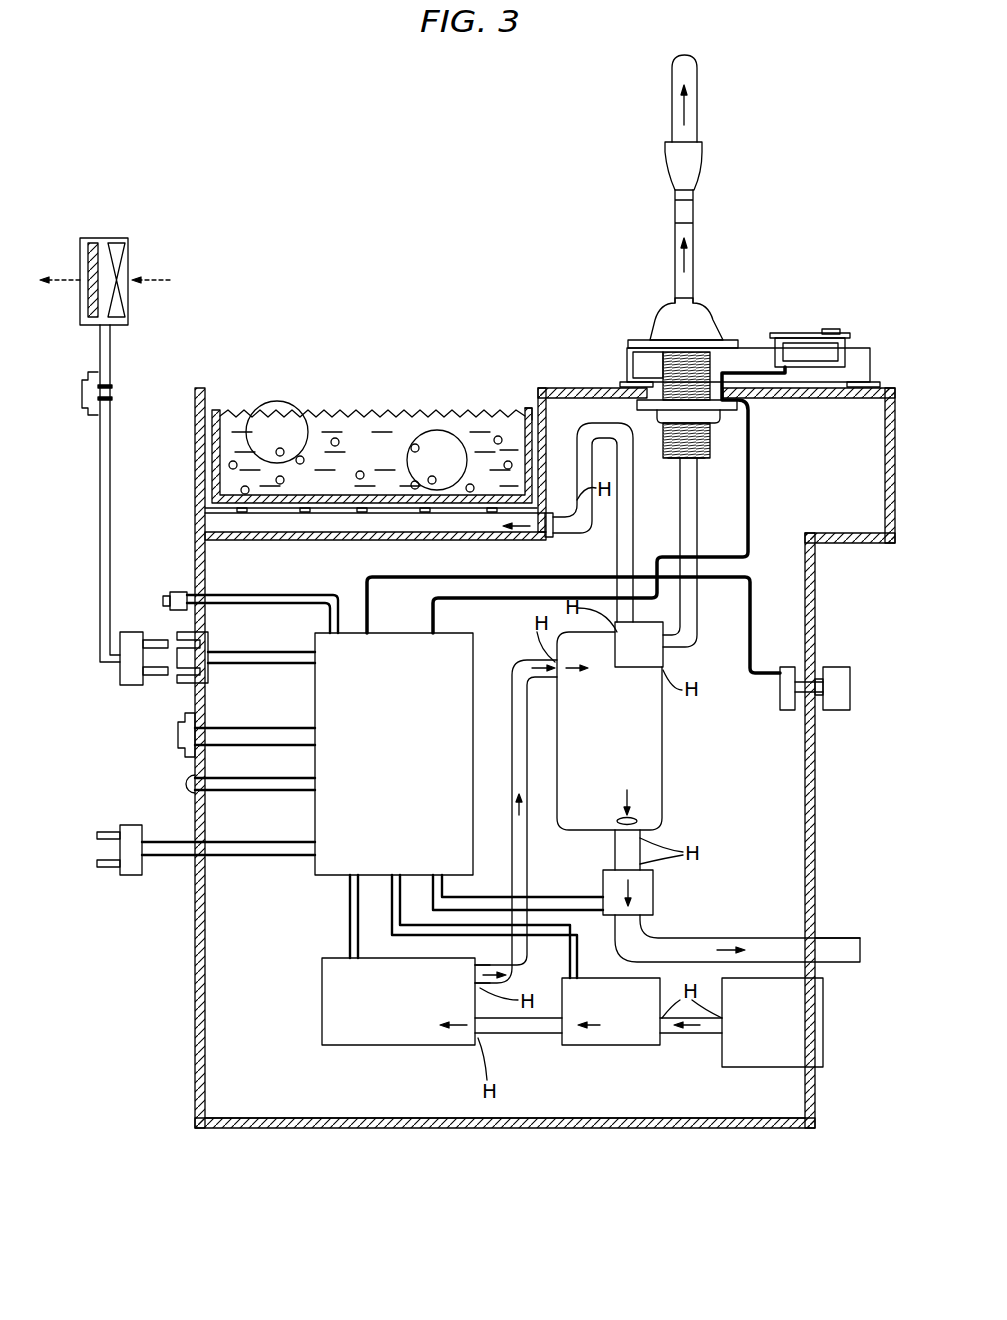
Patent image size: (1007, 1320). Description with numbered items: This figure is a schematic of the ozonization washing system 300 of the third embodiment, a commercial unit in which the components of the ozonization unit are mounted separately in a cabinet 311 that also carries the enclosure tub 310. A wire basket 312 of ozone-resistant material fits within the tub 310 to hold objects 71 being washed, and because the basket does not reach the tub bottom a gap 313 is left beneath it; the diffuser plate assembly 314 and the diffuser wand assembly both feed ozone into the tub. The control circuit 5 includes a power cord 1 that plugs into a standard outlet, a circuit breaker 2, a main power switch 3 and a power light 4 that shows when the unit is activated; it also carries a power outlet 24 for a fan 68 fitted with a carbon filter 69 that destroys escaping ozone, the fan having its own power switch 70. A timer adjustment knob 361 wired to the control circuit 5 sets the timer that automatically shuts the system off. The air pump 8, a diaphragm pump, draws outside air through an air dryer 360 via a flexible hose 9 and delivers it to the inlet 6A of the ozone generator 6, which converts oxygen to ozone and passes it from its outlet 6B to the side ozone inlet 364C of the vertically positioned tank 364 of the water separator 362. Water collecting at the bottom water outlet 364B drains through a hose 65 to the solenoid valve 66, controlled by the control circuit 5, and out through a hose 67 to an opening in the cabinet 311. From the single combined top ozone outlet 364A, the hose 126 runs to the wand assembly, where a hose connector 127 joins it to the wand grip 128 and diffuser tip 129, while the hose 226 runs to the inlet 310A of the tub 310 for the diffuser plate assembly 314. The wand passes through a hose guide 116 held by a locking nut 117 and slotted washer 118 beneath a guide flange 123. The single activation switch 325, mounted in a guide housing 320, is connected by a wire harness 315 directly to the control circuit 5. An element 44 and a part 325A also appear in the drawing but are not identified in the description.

The power cord 1 is at (120, 828).
The circuit breaker 2 is at (163, 600).
The main power switch 3 is at (180, 722).
The power light 4 is at (185, 782).
The control circuit 5 is at (315, 875).
The ozone generator 6 is at (322, 978).
The inlet 6A is at (470, 1038).
The outlet 6B is at (490, 968).
The air pump 8 is at (578, 1045).
The flexible hose 9 is at (680, 1030).
The power outlet 24 is at (210, 640).
The drain outlet 44 is at (815, 965).
The hose 65 is at (615, 845).
The solenoid valve 66 is at (653, 895).
The hose 67 is at (835, 938).
The fan 68 is at (115, 243).
The carbon filter 69 is at (92, 243).
The power switch 70 is at (82, 392).
The object 71 is at (278, 402).
The hose guide 116 is at (672, 462).
The locking nut 117 is at (665, 430).
The slotted washer 118 is at (640, 403).
The guide flange 123 is at (670, 303).
The hose 126 is at (696, 268).
The hose connector 127 is at (675, 218).
The wand grip 128 is at (676, 168).
The diffuser tip 129 is at (698, 112).
The hose 226 is at (530, 413).
The ozonization washing system 300 is at (258, 212).
The enclosure tub 310 is at (540, 392).
The inlet 310A is at (553, 530).
The cabinet 311 is at (765, 1128).
The wire basket 312 is at (218, 412).
The gap 313 is at (300, 525).
The diffuser plate assembly 314 is at (360, 507).
The wire harness 315 is at (750, 520).
The guide housing 320 is at (635, 340).
The activation switch 325 is at (800, 334).
The sensor contact 325A is at (835, 330).
The air dryer 360 is at (823, 1042).
The timer adjustment knob 361 is at (832, 667).
The water separator 362 is at (688, 727).
The tank 364 is at (662, 782).
The top ozone outlet 364A is at (663, 627).
The bottom water outlet 364B is at (640, 820).
The side ozone inlet 364C is at (557, 665).